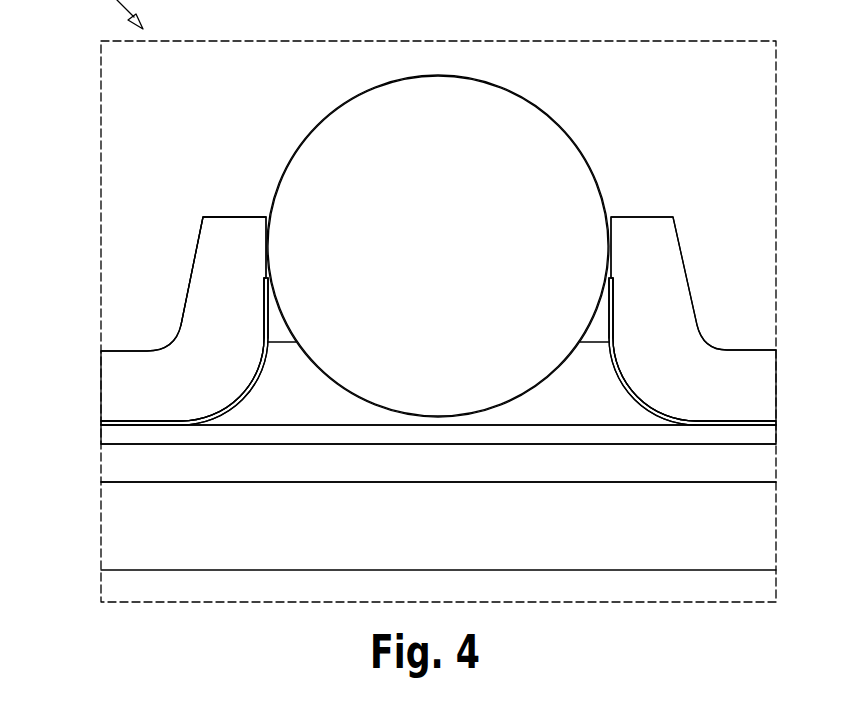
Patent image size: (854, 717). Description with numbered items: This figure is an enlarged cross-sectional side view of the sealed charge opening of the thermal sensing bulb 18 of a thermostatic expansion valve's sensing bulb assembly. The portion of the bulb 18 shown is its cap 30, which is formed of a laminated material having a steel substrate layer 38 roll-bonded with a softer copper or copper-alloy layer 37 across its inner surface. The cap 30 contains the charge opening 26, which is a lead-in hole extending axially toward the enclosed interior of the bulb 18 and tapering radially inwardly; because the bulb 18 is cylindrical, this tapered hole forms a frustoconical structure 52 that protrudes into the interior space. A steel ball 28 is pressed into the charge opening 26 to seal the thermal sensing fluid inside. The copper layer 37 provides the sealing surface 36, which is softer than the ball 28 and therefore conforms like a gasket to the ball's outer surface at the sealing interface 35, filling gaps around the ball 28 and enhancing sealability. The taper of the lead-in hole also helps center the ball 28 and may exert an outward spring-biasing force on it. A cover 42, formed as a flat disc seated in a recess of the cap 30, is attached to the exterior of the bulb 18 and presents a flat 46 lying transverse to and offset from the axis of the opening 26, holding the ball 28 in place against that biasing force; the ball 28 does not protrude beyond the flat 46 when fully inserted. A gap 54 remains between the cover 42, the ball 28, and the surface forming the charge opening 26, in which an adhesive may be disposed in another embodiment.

The bulb 18 is at (87, 0).
The charge opening 26 is at (611, 270).
The ball 28 is at (420, 98).
The cap 30 is at (96, 373).
The sealing interface 35 is at (267, 297).
The sealing surface 36 is at (266, 278).
The copper or copper-alloy layer 37 is at (238, 403).
The substrate layer 38 is at (178, 403).
The cover 42 is at (280, 432).
The flat 46 is at (363, 425).
The frustoconical structure 52 is at (641, 283).
The gap 54 is at (578, 393).